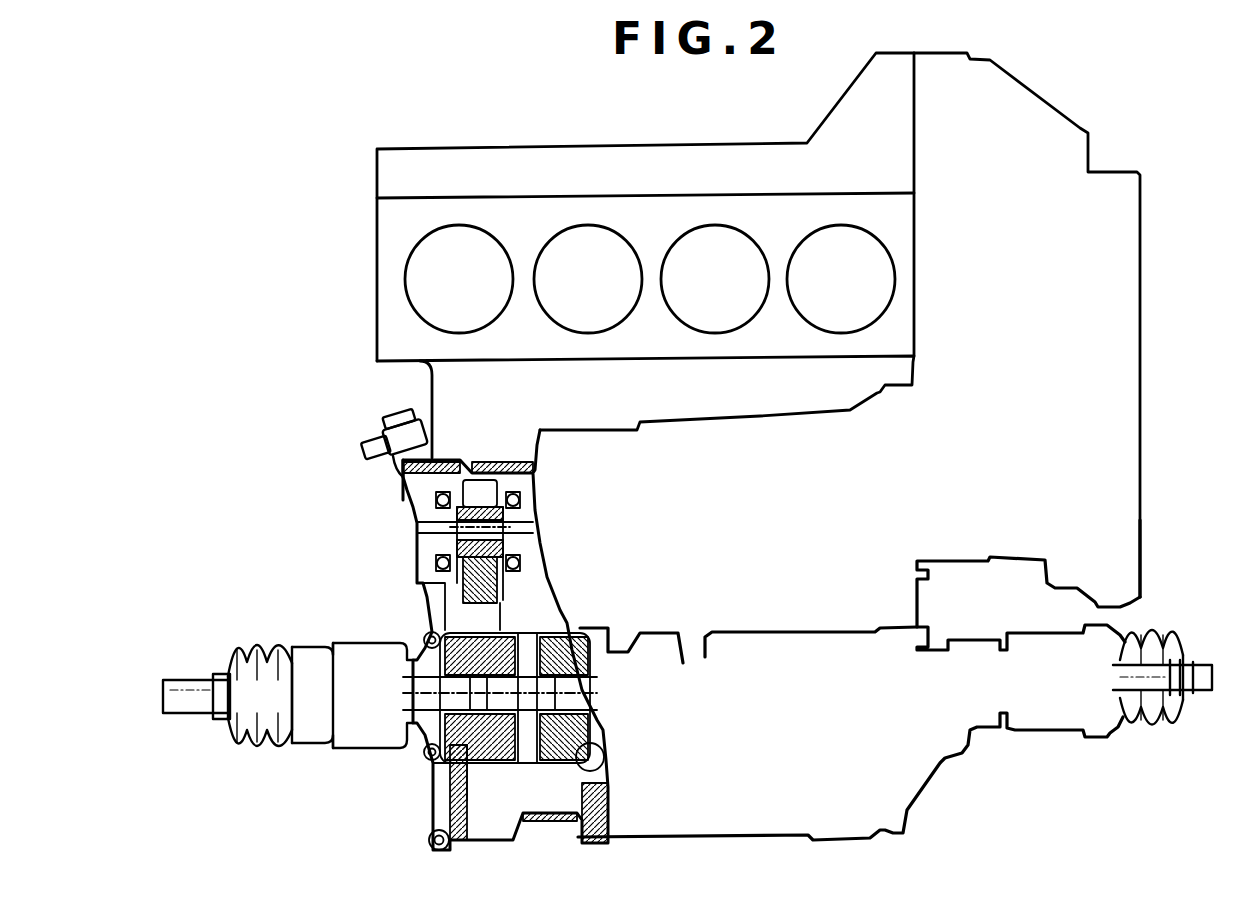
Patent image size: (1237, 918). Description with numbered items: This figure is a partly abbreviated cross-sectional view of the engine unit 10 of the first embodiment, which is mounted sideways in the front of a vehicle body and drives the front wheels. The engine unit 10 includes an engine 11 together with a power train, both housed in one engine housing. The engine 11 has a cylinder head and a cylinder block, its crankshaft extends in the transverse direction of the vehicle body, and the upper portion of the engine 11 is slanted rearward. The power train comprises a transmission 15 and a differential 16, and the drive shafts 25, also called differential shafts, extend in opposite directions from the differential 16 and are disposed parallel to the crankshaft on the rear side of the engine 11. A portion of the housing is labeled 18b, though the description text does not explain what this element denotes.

The engine unit 10 is at (615, 107).
The engine 11 is at (779, 132).
The transmission 15 is at (1149, 414).
The differential 16 is at (500, 841).
The clutch housing flange 18b is at (1143, 528).
The drive shafts 25 is at (287, 742).